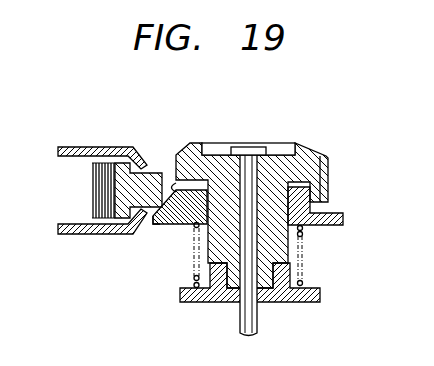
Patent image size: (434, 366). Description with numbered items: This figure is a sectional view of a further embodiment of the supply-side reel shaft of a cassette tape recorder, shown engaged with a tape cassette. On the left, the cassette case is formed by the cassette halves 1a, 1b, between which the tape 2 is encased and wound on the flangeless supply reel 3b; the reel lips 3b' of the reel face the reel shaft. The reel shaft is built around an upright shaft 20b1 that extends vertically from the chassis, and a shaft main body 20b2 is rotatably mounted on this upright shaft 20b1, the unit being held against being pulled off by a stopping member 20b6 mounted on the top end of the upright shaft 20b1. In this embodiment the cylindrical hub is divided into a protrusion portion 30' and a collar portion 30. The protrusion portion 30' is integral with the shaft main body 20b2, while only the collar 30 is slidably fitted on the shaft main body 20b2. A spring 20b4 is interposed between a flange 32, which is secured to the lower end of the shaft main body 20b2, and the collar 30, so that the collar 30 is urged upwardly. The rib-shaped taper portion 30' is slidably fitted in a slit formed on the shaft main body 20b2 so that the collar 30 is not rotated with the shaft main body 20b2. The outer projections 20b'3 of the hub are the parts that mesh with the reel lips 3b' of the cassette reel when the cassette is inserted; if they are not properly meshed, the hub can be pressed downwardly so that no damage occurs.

The cassette half 1a is at (70, 147).
The cassette half 1b is at (67, 235).
The tape 2 is at (92, 193).
The supply reel 3b is at (138, 154).
The reel lips 3b' is at (178, 147).
The collar portion 30 is at (335, 236).
The protrusion portion 30' is at (125, 245).
The flange 32 is at (200, 303).
The upright shaft 20b1 is at (256, 320).
The shaft main body 20b2 is at (307, 157).
The outer projections 20b'3 is at (370, 179).
The spring 20b4 is at (193, 280).
The stopping member 20b6 is at (273, 143).